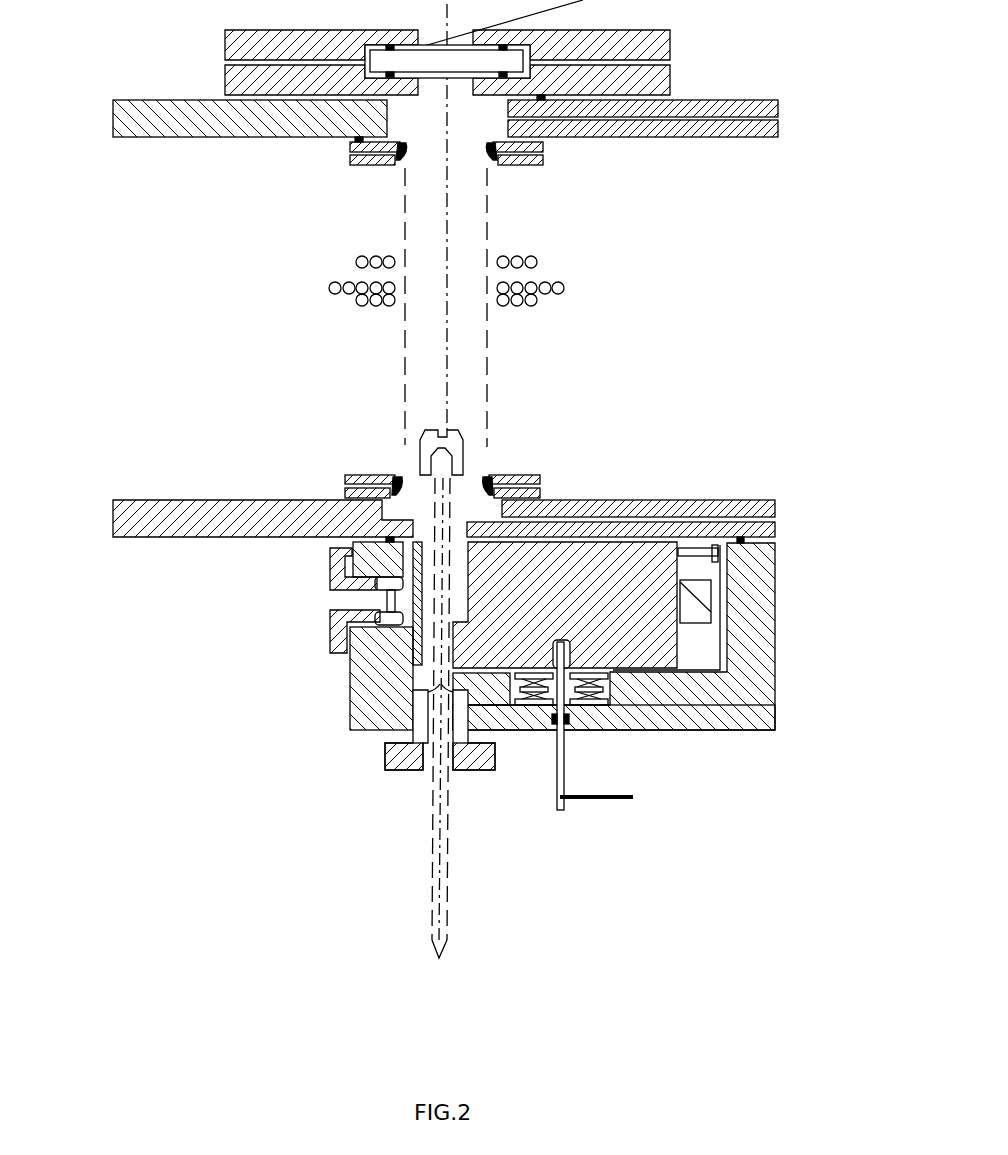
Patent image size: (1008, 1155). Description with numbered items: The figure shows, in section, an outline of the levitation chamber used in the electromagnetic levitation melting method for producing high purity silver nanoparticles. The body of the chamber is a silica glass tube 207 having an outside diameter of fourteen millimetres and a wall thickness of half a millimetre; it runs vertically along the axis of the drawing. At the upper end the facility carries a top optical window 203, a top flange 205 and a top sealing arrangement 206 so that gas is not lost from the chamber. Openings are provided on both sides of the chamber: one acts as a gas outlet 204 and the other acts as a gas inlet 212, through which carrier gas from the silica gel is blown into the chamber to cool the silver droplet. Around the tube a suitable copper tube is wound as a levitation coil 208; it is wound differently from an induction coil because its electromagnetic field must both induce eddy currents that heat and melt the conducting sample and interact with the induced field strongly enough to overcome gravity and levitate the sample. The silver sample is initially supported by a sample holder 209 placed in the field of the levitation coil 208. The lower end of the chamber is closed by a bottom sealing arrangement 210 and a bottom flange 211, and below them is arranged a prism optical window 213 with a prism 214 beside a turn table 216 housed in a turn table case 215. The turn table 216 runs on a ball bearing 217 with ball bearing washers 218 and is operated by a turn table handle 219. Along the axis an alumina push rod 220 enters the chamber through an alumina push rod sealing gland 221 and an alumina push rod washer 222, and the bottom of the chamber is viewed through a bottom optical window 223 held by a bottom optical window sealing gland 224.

The top optical window 203 is at (523, 58).
The gas outlet 204 is at (778, 100).
The top flange 205 is at (778, 120).
The top sealing arrangement 206 is at (543, 162).
The silica glass tube 207 is at (487, 197).
The levitation coil 208 is at (565, 287).
The sample holder 209 is at (467, 442).
The bottom sealing arrangement 210 is at (490, 468).
The bottom flange 211 is at (775, 500).
The gas inlet 212 is at (775, 522).
The prism optical window 213 is at (718, 555).
The prism 214 is at (710, 583).
The turn table case 215 is at (720, 612).
The turn table 216 is at (720, 640).
The ball bearing 217 is at (610, 687).
The ball bearing washers 218 is at (610, 703).
The turn table handle 219 is at (567, 757).
The alumina push rod 220 is at (651, 830).
The alumina push rod sealing gland 221 is at (385, 763).
The alumina push rod washer 222 is at (350, 691).
The bottom optical window 223 is at (387, 604).
The bottom optical window sealing gland 224 is at (330, 565).